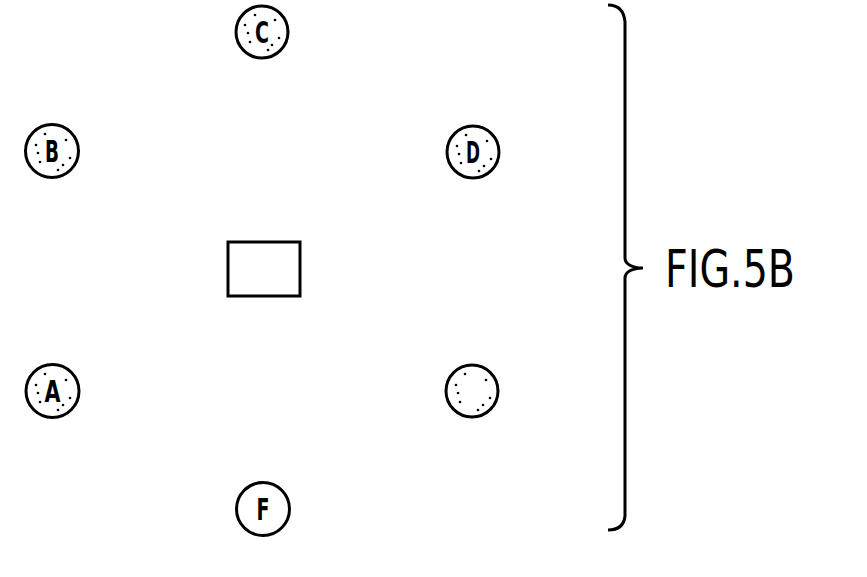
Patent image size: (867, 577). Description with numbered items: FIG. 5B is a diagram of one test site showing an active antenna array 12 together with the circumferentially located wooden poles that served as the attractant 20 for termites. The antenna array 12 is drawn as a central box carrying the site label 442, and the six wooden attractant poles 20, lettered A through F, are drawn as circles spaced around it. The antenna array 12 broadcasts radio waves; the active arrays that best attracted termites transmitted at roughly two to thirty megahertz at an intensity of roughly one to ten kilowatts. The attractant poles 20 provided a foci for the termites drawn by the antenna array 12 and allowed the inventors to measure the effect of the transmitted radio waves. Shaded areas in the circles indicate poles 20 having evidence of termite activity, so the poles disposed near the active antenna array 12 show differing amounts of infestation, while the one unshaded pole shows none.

The antenna array 12 is at (303, 262).
The attractant pole 20 is at (483, 372).
The tag identifier value 442 is at (264, 269).